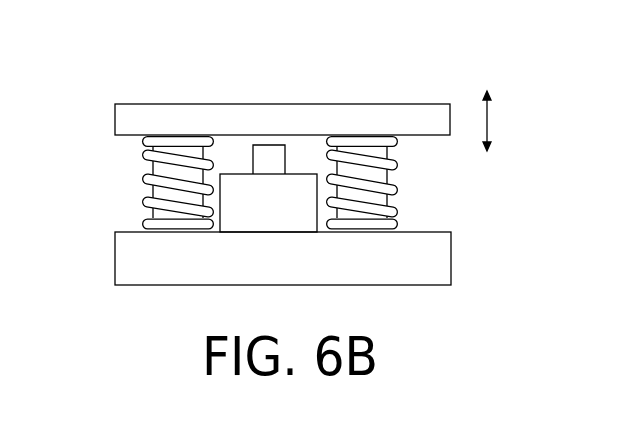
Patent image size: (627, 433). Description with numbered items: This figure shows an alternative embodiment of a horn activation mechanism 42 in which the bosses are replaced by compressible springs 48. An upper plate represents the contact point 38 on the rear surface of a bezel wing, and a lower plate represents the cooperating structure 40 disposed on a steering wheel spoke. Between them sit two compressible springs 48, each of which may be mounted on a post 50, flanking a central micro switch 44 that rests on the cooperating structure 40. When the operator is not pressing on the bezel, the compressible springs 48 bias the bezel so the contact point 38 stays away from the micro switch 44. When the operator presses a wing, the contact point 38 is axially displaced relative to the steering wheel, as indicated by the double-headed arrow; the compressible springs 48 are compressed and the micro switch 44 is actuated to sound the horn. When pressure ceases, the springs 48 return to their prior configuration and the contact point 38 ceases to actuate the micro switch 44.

The contact point 38 is at (268, 114).
The cooperating structure 40 is at (348, 239).
The horn activation mechanism 42 is at (493, 242).
The micro switch 44 is at (270, 217).
The compressible spring 48 is at (268, 183).
The post 50 is at (167, 192).